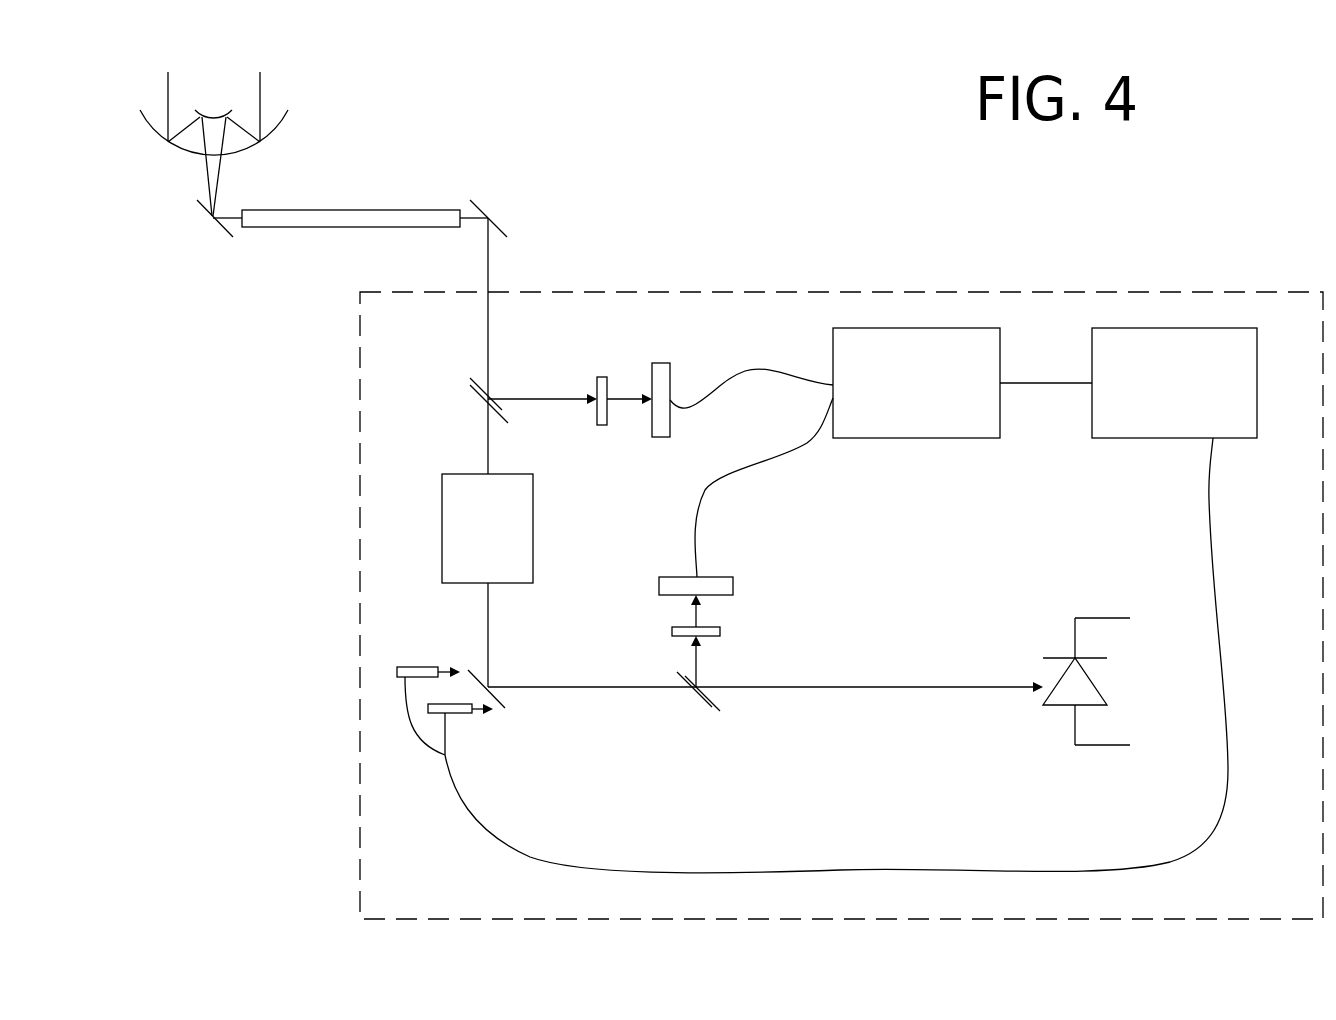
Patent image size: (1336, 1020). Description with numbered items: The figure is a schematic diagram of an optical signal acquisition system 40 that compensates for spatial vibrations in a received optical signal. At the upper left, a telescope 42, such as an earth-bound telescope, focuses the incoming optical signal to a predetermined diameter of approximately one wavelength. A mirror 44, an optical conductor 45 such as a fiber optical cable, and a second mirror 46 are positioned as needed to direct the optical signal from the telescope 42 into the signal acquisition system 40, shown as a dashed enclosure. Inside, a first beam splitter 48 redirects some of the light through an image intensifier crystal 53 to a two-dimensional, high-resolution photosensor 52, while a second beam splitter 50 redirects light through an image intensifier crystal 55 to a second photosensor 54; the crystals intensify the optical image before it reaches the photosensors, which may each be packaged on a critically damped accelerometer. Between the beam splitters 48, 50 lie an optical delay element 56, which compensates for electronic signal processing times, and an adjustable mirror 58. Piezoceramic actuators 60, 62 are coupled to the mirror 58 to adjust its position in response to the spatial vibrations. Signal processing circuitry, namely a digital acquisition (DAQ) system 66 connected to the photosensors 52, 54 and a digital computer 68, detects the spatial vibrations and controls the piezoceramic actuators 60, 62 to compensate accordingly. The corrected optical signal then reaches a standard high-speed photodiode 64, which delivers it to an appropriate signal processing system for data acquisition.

The optical signal acquisition system 40 is at (427, 897).
The telescope 42 is at (289, 78).
The mirror 44 is at (202, 208).
The optical conductor 45 is at (353, 210).
The mirror 46 is at (482, 207).
The beam splitter 48 is at (477, 392).
The beam splitter 50 is at (702, 698).
The photosensor 52 is at (663, 363).
The image intensifier crystal 53 is at (603, 425).
The photosensor 54 is at (678, 577).
The image intensifier crystal 55 is at (673, 628).
The optical delay element 56 is at (465, 474).
The adjustable mirror 58 is at (493, 685).
The piezoceramic actuator 60 is at (433, 665).
The piezoceramic actuator 62 is at (460, 715).
The high-speed photodiode 64 is at (1097, 618).
The digital acquisition (DAQ) system 66 is at (957, 438).
The digital computer 68 is at (1173, 438).